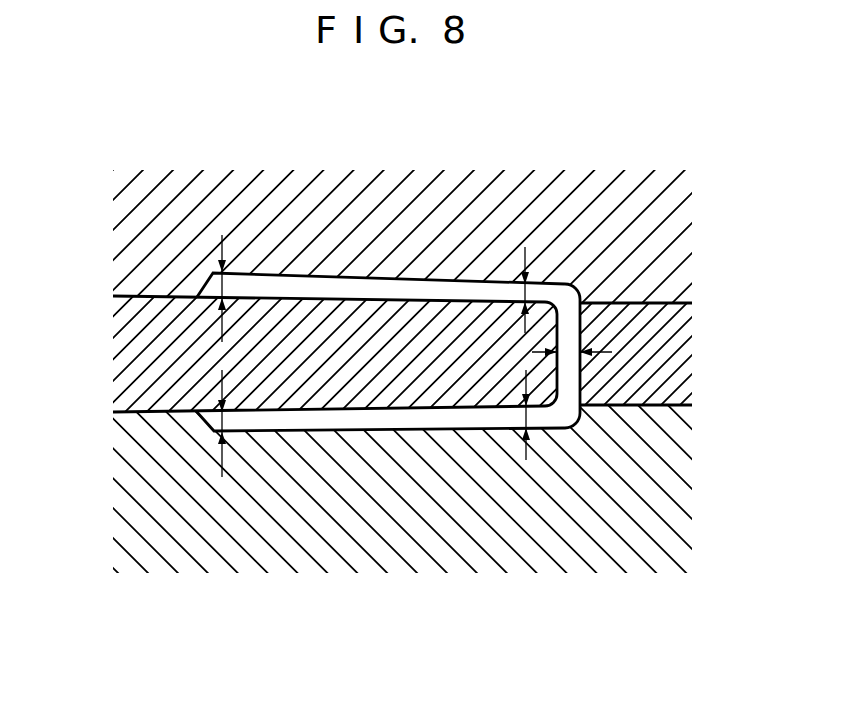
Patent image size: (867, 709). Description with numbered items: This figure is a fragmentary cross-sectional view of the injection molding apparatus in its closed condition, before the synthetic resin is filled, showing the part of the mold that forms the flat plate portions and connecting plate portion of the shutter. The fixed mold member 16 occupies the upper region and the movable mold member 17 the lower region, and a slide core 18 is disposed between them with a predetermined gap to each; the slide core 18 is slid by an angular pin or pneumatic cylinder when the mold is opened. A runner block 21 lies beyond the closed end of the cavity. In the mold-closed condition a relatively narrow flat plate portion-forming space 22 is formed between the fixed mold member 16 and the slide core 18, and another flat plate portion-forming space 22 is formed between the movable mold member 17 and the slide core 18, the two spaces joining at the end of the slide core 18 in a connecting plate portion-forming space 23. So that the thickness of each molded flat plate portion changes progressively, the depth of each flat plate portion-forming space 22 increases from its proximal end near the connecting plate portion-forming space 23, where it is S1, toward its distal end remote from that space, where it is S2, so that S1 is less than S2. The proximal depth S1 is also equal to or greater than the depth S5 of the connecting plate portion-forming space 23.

The fixed mold member 16 is at (265, 192).
The movable mold member 17 is at (185, 558).
The slide core 18 is at (150, 357).
The runner block 21 is at (635, 318).
The flat plate portion-forming space 22 is at (340, 285).
The connecting plate portion-forming space 23 is at (569, 410).
The proximal end depth of the flat plate portion-forming space S1 is at (520, 290).
The distal end depth of the flat plate portion-forming space S2 is at (210, 287).
The depth of the connecting plate portion-forming space S5 is at (569, 410).